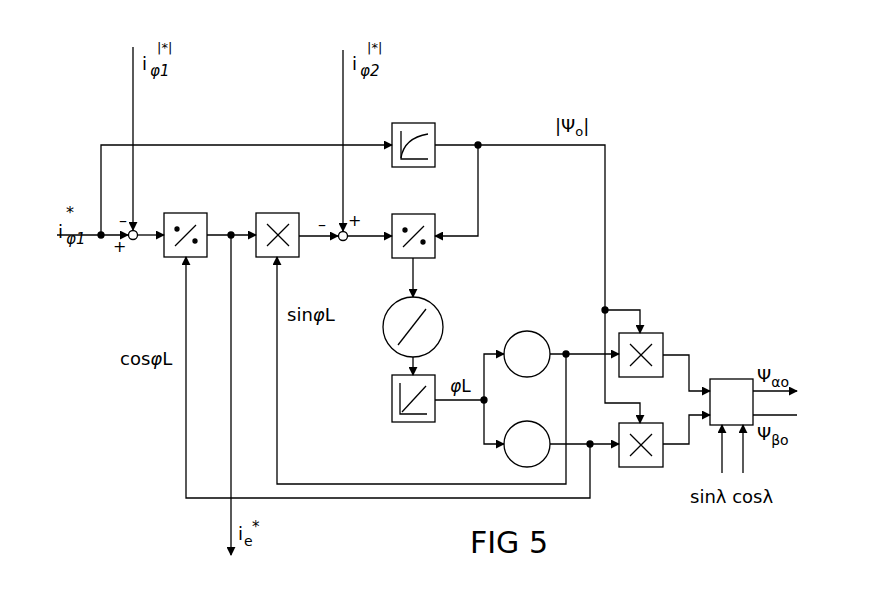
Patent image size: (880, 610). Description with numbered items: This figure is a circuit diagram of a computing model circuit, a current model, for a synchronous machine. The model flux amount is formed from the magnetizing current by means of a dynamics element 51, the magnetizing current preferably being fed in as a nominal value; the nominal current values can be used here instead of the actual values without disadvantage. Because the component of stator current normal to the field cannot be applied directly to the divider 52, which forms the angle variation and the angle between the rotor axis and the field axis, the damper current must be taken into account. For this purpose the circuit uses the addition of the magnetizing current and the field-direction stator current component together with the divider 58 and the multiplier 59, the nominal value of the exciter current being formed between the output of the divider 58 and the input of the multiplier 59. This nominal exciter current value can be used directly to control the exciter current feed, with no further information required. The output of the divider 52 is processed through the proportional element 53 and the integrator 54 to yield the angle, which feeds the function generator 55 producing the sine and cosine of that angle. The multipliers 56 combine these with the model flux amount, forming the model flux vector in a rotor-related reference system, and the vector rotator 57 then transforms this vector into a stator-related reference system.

The dynamics element 51 is at (427, 123).
The divider 52 is at (428, 258).
The 1/Tm proportional element 53 is at (438, 312).
The integrator 54 is at (430, 375).
The element for forming model flux vector 55 is at (535, 377).
The element for forming model flux vector 56 is at (650, 377).
The vector rotator 57 is at (728, 379).
The divider 58 is at (178, 213).
The multiplier 59 is at (270, 213).